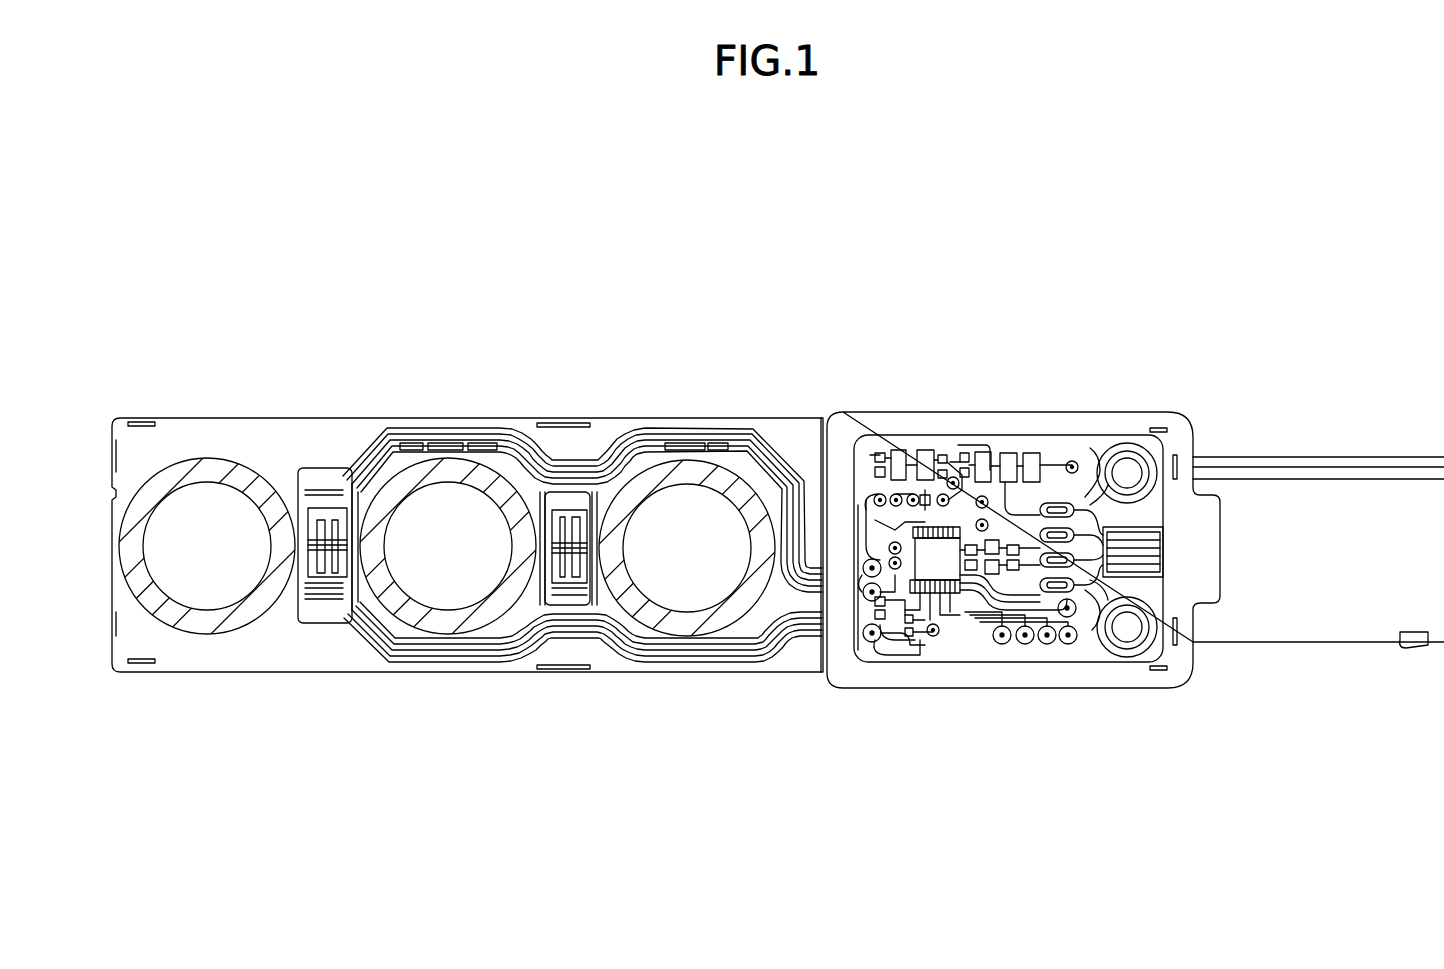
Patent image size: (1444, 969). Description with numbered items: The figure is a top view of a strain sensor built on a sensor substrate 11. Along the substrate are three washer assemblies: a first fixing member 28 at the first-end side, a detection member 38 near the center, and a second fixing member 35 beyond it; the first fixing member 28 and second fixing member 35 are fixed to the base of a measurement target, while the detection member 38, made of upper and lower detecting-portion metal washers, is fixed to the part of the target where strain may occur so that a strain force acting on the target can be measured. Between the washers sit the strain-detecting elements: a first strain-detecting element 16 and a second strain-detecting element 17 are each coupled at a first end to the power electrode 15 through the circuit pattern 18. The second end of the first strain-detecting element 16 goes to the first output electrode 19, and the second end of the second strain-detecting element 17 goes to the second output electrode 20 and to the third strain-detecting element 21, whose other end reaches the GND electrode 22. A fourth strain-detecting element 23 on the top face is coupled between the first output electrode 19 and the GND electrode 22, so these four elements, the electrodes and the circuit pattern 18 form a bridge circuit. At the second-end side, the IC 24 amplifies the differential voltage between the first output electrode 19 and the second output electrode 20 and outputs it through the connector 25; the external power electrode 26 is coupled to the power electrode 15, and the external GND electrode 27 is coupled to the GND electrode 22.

The sensor substrate 11 is at (304, 437).
The first fixing member 28 is at (207, 467).
The detection member 38 is at (476, 468).
The second fixing member 35 is at (717, 468).
The third strain-detecting element 21 is at (276, 631).
The second strain-detecting element 17 is at (335, 575).
The fourth strain-detecting element 23 is at (505, 643).
The first strain-detecting element 16 is at (583, 550).
The circuit pattern 18 is at (788, 632).
The power electrode 15 is at (989, 550).
The GND electrode 22 is at (873, 567).
The second output electrode 20 is at (866, 573).
The IC 24 is at (937, 557).
The external GND electrode 27 is at (1057, 560).
The first output electrode 19 is at (898, 620).
The external power electrode 26 is at (1053, 602).
The connector 25 is at (1300, 634).